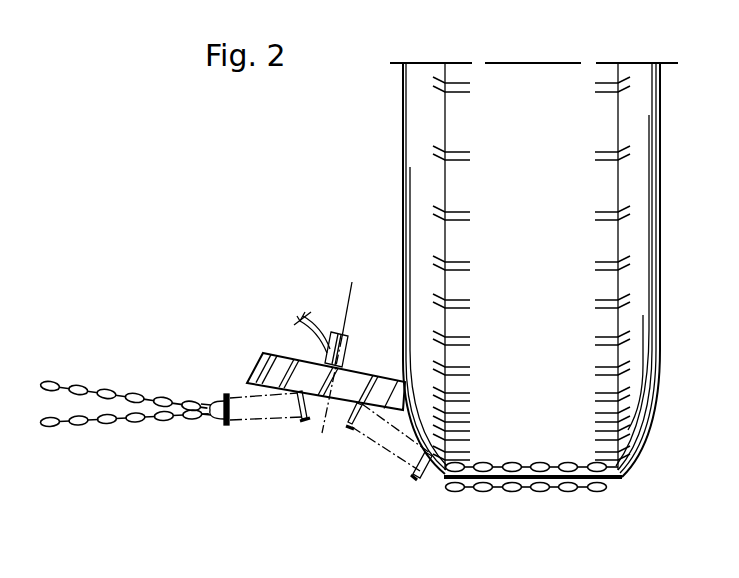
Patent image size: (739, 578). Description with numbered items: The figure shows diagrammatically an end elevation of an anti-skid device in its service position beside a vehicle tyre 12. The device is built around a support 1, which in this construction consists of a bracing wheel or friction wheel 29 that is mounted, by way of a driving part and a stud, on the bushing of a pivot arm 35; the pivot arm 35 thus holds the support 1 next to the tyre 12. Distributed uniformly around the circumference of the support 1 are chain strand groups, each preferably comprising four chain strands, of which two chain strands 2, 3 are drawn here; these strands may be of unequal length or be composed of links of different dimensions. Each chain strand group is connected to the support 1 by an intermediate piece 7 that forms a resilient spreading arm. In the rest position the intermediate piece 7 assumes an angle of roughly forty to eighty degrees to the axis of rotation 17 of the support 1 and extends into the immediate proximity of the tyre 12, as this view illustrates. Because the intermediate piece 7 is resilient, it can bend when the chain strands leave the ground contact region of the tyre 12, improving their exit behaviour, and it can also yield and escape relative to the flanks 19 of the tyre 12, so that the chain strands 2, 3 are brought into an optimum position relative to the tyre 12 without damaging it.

The support 1 is at (268, 326).
The chain strand 2 is at (81, 372).
The chain strand 3 is at (77, 441).
The intermediate piece 7 is at (263, 418).
The tyre 12 is at (392, 121).
The axis of rotation 17 is at (352, 282).
The flanks 19 is at (417, 427).
The bracing wheel or friction wheel 29 is at (273, 372).
The pivot arm 35 is at (307, 327).